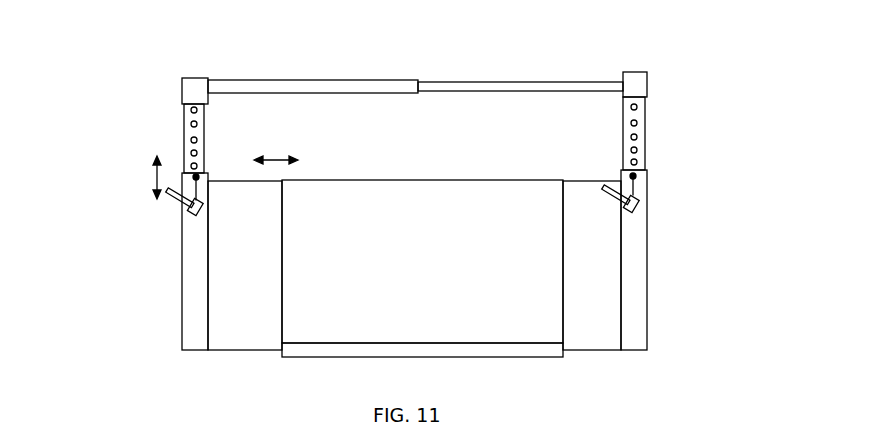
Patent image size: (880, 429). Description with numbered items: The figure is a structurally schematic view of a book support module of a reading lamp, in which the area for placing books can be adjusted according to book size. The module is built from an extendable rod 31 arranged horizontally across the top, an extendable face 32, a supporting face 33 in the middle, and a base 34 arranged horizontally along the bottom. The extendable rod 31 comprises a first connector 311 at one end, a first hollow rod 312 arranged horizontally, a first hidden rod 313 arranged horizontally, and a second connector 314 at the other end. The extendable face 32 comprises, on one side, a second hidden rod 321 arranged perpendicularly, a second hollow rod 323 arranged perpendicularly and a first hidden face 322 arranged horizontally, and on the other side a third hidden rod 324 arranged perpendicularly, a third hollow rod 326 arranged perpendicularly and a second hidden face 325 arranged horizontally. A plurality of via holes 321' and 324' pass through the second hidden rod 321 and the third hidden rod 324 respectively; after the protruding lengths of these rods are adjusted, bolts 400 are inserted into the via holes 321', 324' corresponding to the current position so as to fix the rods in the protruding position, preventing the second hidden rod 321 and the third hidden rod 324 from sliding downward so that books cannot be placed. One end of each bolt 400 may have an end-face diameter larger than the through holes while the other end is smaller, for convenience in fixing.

The extendable rod 31 is at (522, 34).
The first connector 311 is at (192, 90).
The first hollow rod 312 is at (323, 83).
The first hidden rod 313 is at (507, 88).
The second connector 314 is at (633, 87).
The extendable face 32 is at (72, 135).
The second hidden rod 321 is at (139, 135).
The via holes 321' is at (148, 133).
The second hollow rod 323 is at (192, 238).
The first hidden face 322 is at (240, 307).
The third hidden rod 324 is at (679, 131).
The via holes 324' is at (676, 128).
The third hollow rod 326 is at (629, 246).
The second hidden face 325 is at (585, 240).
The supporting face 33 is at (533, 300).
The base 34 is at (533, 352).
The bolts 400 is at (607, 187).